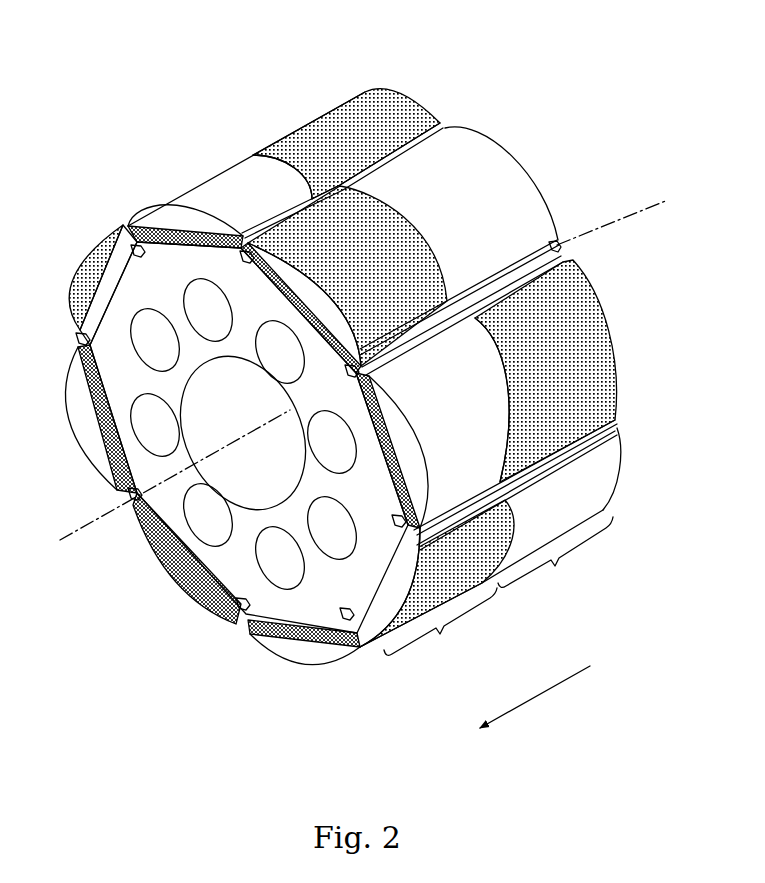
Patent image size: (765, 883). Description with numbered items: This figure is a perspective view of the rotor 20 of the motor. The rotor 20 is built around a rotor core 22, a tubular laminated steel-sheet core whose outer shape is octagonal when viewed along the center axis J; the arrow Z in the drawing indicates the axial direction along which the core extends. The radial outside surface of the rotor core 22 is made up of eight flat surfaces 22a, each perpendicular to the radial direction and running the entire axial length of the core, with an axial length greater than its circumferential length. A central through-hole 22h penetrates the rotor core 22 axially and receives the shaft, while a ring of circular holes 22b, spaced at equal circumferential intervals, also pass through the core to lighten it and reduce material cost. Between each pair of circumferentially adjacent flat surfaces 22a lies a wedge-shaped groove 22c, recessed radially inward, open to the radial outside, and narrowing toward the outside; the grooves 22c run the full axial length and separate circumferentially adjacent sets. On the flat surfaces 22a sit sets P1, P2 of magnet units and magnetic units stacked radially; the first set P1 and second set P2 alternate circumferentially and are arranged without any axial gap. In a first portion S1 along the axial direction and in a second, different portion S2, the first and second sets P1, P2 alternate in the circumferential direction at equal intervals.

The rotor 20 is at (590, 100).
The rotor core 22 is at (318, 608).
The flat surface 22a is at (172, 585).
The hole 22b is at (200, 514).
The groove 22c is at (590, 278).
The through-hole 22h is at (250, 478).
The first set P1 is at (190, 183).
The second set P2 is at (327, 240).
The center axis J is at (627, 200).
The first portion S1 is at (440, 622).
The second portion S2 is at (555, 555).
The axial direction Z is at (524, 708).